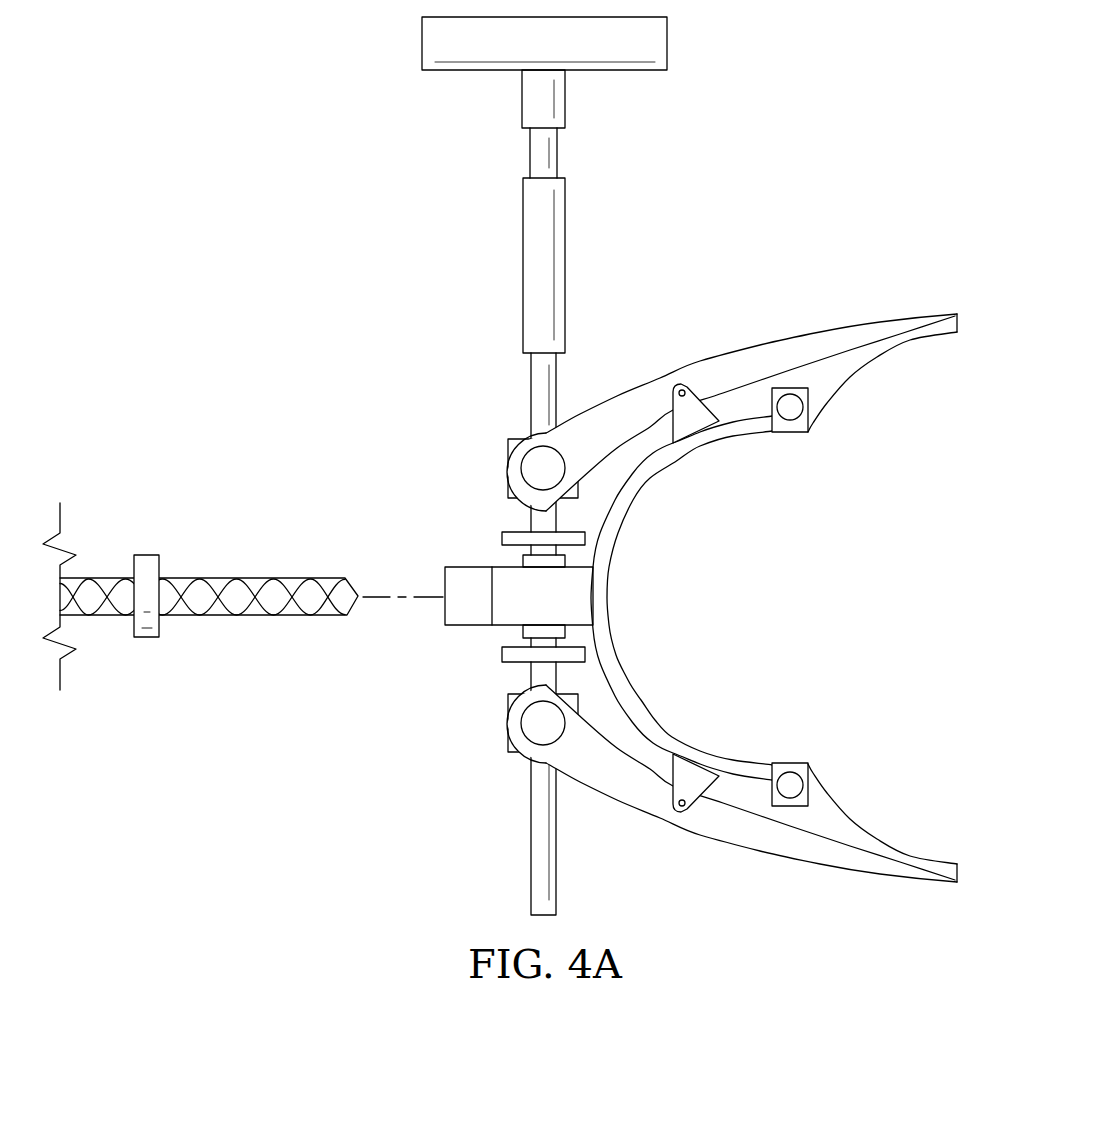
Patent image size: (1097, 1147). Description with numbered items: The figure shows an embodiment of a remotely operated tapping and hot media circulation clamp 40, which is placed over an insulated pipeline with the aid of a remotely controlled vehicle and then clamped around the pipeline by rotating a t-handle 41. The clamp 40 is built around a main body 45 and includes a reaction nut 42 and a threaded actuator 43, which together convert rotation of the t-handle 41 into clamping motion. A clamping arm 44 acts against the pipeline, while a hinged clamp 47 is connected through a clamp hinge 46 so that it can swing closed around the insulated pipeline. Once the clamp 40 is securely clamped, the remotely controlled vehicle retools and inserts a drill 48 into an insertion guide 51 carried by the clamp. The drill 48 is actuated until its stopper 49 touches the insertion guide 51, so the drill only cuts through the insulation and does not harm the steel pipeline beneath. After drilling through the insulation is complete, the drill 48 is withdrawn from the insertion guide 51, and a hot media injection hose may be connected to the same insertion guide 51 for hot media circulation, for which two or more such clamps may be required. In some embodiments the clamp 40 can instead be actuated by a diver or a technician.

The remotely operated tapping and hot media circulation clamp 40 is at (908, 66).
The t-handle 41 is at (422, 43).
The reaction nut 42 is at (507, 742).
The threaded actuator 43 is at (531, 832).
The clamping arm 44 is at (710, 838).
The main body 45 is at (659, 710).
The clamp hinge 46 is at (788, 762).
The hinged clamp 47 is at (869, 833).
The drill 48 is at (218, 616).
The stopper 49 is at (147, 638).
The insertion guide 51 is at (467, 625).